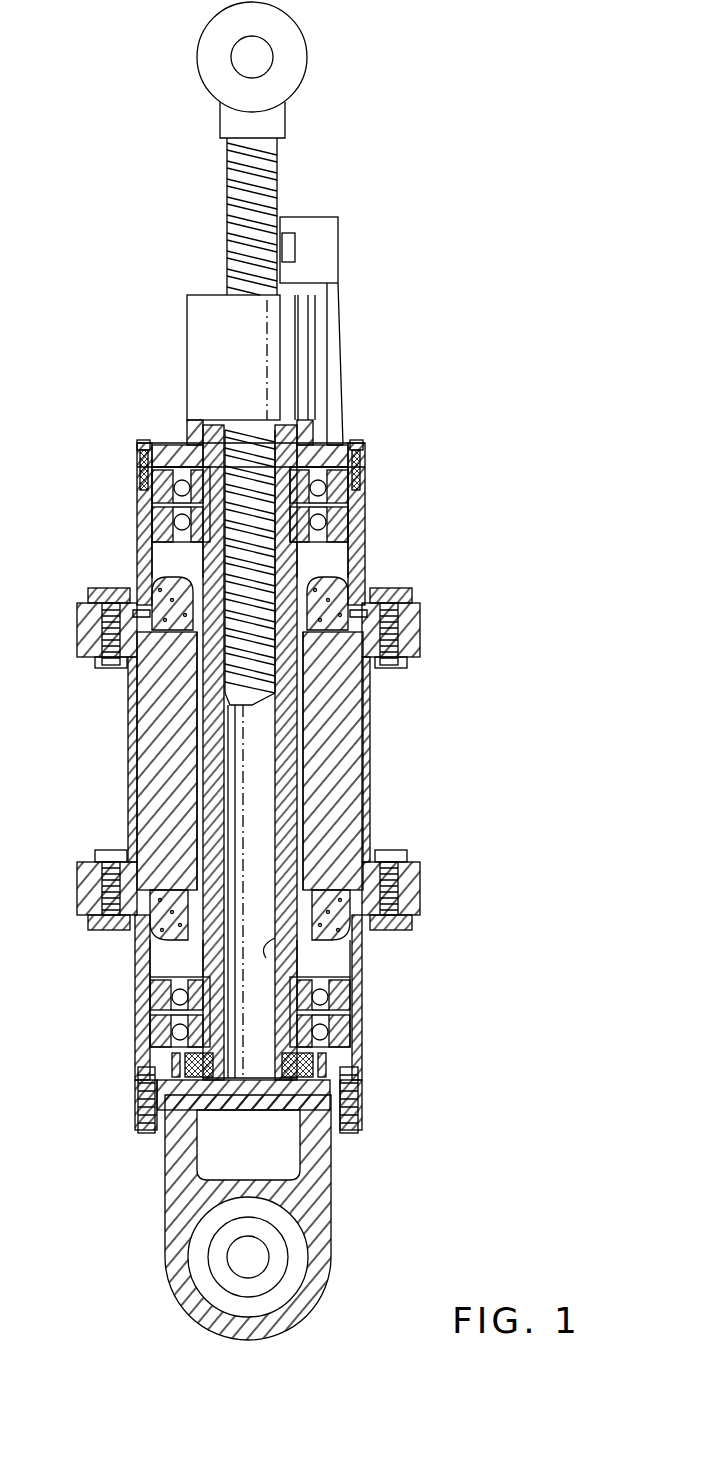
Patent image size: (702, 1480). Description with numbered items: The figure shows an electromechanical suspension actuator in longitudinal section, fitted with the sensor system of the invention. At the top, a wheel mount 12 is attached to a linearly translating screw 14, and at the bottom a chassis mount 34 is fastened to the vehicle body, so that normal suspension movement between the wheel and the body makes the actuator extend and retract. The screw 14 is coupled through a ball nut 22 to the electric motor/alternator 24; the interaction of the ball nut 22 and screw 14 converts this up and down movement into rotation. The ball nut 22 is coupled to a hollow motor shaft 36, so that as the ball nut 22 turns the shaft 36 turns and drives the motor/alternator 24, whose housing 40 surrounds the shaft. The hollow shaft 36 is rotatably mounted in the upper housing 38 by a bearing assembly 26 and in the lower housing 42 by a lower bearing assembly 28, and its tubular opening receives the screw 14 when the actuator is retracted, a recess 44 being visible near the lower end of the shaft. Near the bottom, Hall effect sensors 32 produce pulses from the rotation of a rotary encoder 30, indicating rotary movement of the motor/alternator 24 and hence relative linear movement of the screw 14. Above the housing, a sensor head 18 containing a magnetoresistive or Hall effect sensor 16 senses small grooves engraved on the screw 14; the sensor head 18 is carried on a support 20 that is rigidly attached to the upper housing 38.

The wheel mount 12 is at (295, 58).
The screw 14 is at (248, 172).
The magnetoresistive or Hall effect sensor 16 is at (290, 247).
The sensor head 18 is at (343, 250).
The support 20 is at (345, 375).
The ball nut 22 is at (200, 343).
The electric motor/alternator 24 is at (378, 760).
The bearing assembly 26 is at (345, 503).
The lower bearing assembly 28 is at (340, 999).
The rotary encoder 30 is at (307, 1064).
The Hall effect sensors 32 is at (180, 1062).
The chassis mount 34 is at (175, 1296).
The hollow motor shaft 36 is at (213, 800).
The upper housing 38 is at (148, 512).
The housing 40 is at (128, 716).
The lower housing 42 is at (135, 1008).
The seal recess 44 is at (266, 958).